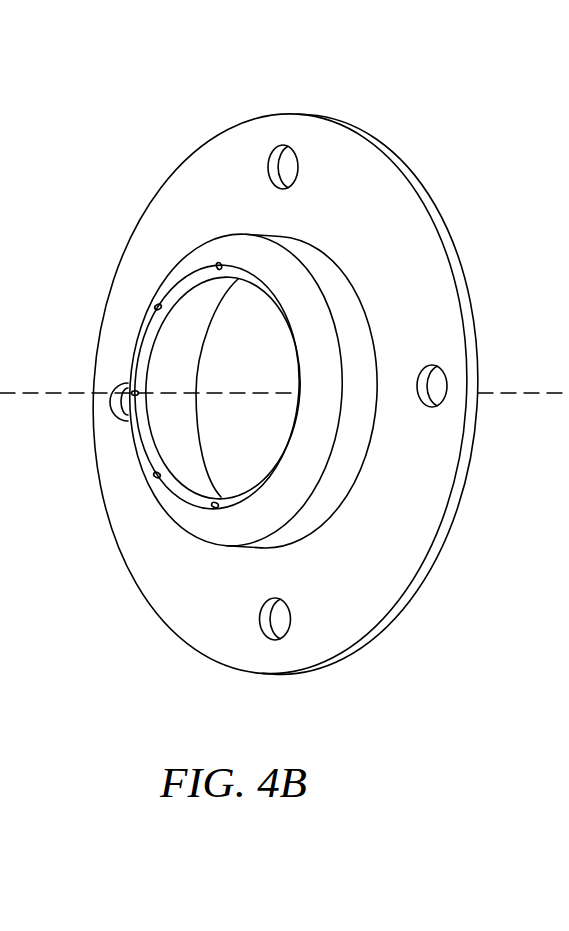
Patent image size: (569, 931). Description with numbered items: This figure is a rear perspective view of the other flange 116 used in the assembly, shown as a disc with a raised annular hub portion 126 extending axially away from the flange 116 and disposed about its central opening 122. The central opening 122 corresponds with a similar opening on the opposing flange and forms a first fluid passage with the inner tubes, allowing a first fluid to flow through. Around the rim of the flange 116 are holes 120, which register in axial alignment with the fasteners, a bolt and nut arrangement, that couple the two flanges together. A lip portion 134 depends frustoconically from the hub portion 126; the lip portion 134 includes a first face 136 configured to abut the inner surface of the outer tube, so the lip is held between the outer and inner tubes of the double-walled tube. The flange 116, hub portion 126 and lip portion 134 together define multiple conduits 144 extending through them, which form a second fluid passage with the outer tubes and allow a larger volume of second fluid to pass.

The flange 116 is at (405, 162).
The holes 120 is at (440, 383).
The central opening 122 is at (250, 420).
The annular hub portion 126 is at (308, 250).
The lip portion 134 is at (223, 240).
The first face 136 is at (270, 246).
The conduit 144 is at (158, 307).